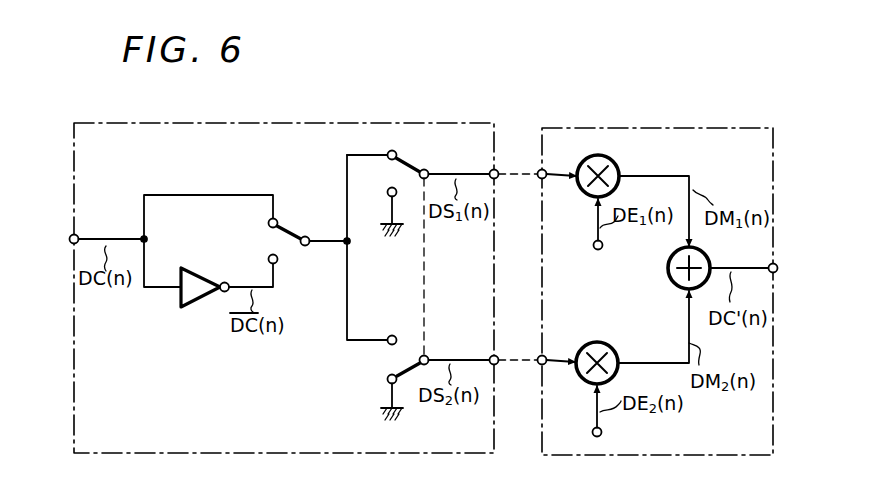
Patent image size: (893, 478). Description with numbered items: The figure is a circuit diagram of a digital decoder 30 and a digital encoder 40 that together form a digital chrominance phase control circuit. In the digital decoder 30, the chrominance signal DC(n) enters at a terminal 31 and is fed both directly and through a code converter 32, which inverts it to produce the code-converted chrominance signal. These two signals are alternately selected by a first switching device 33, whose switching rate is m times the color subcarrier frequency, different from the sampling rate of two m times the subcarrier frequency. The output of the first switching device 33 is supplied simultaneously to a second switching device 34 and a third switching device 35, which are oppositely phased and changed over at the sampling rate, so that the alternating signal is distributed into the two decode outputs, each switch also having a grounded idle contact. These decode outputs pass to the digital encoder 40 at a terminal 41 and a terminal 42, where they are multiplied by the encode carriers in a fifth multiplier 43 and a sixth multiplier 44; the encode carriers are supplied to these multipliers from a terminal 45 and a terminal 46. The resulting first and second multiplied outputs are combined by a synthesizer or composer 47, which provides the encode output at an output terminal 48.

The digital decoder 30 is at (328, 108).
The terminal 31 is at (71, 236).
The code converter 32 is at (206, 288).
The first switching device 33 is at (300, 241).
The second switching device 34 is at (419, 176).
The third switching device 35 is at (418, 359).
The digital encoder 40 is at (692, 111).
The terminal 41 is at (539, 170).
The terminal 42 is at (539, 364).
The fifth multiplier 43 is at (618, 160).
The sixth multiplier 44 is at (626, 320).
The terminal 45 is at (594, 250).
The terminal 46 is at (592, 435).
The synthesizer or composer 47 is at (669, 286).
The output terminal 48 is at (777, 263).